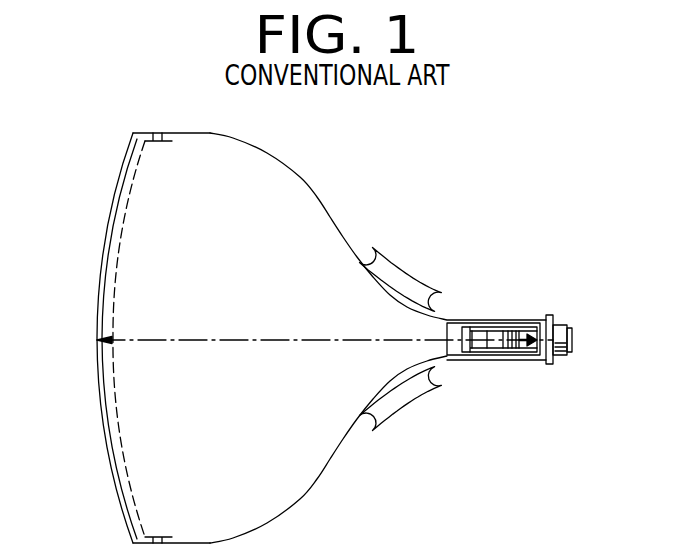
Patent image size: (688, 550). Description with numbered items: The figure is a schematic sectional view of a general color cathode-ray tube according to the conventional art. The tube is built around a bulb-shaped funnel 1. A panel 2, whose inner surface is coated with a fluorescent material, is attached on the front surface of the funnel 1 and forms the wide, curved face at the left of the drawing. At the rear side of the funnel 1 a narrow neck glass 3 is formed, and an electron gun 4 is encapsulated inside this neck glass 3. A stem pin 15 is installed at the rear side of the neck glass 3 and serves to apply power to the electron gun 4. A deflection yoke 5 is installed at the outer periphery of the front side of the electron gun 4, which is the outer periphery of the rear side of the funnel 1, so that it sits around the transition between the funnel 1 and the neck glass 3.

The funnel 1 is at (321, 476).
The panel 2 is at (97, 378).
The neck glass 3 is at (502, 361).
The electron gun 4 is at (498, 325).
The deflection yoke 5 is at (398, 267).
The stem pin 15 is at (557, 357).